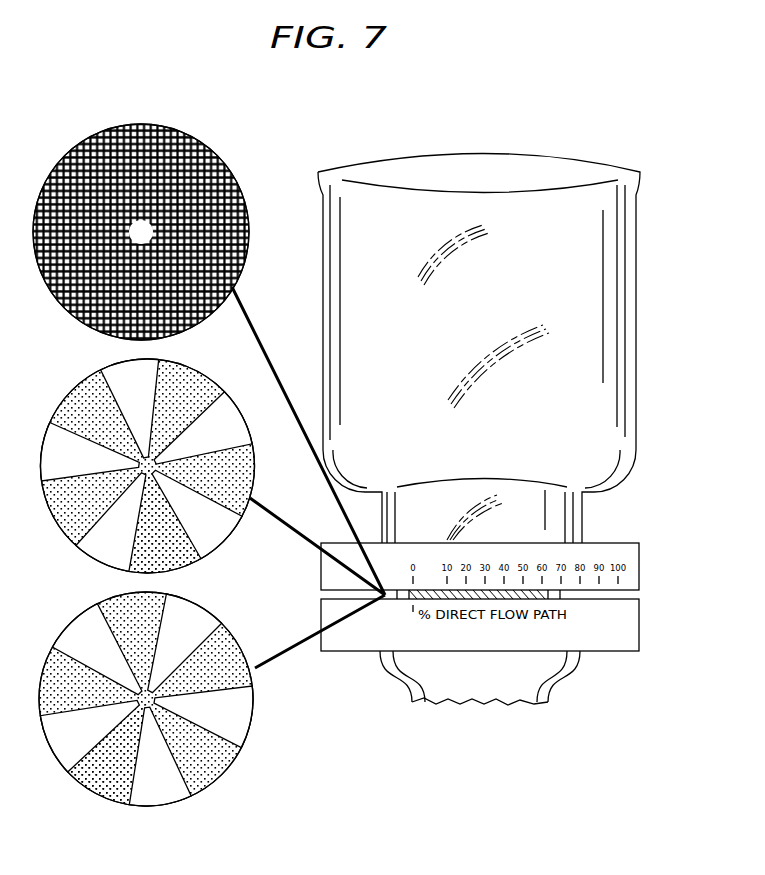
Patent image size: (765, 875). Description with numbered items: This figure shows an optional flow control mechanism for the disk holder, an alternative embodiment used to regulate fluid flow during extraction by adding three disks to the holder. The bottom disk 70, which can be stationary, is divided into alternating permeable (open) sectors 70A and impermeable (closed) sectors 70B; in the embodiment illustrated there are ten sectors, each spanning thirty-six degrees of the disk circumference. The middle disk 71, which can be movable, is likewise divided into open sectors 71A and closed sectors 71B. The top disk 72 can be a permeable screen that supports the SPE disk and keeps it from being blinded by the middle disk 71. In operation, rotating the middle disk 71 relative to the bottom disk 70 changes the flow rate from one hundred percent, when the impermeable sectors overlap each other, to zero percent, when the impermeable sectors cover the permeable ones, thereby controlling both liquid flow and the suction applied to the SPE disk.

The top disk 72 is at (220, 158).
The middle disk 71 is at (171, 462).
The open sector of middle disk 71A is at (232, 420).
The closed sector of middle disk 71B is at (177, 567).
The bottom disk 70 is at (178, 705).
The permeable sector 70A is at (238, 713).
The impermeable sector 70B is at (217, 769).